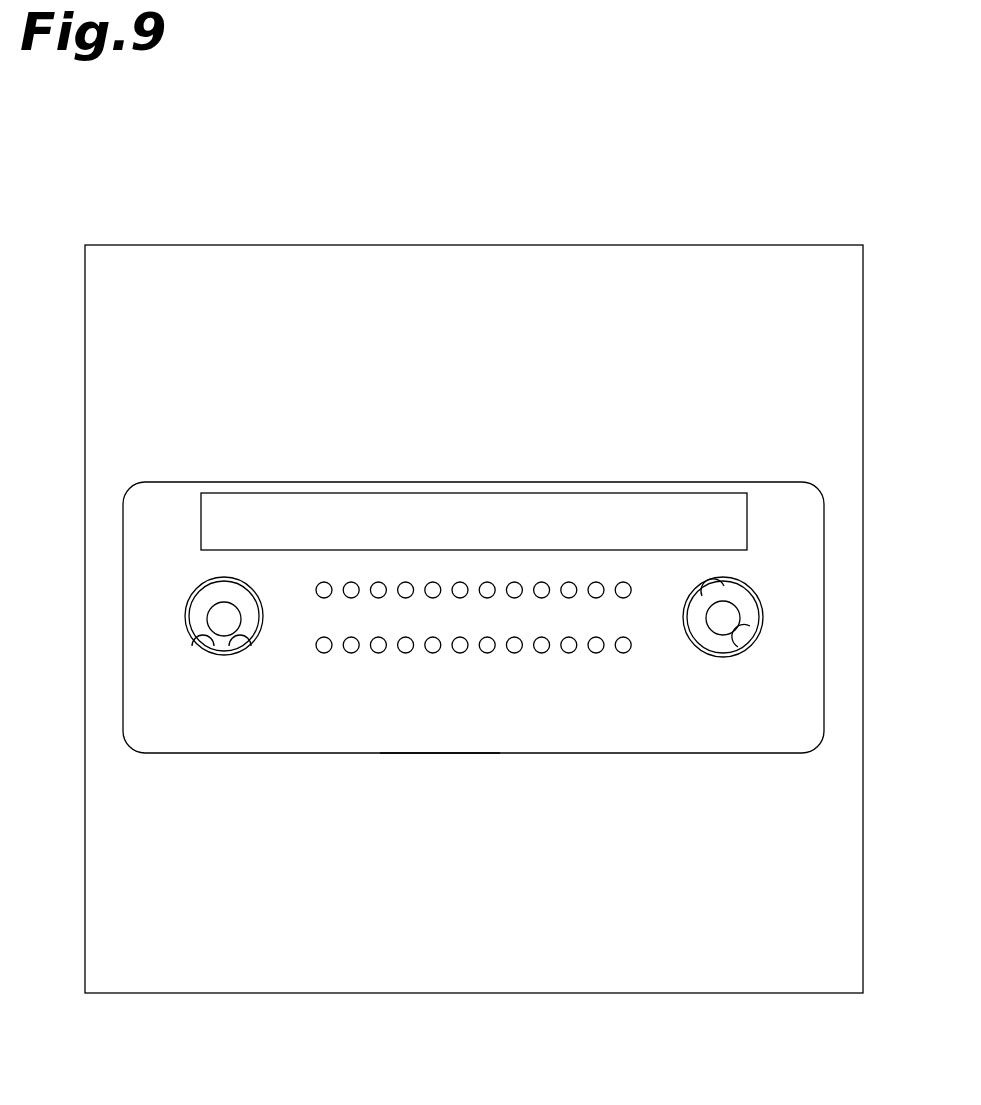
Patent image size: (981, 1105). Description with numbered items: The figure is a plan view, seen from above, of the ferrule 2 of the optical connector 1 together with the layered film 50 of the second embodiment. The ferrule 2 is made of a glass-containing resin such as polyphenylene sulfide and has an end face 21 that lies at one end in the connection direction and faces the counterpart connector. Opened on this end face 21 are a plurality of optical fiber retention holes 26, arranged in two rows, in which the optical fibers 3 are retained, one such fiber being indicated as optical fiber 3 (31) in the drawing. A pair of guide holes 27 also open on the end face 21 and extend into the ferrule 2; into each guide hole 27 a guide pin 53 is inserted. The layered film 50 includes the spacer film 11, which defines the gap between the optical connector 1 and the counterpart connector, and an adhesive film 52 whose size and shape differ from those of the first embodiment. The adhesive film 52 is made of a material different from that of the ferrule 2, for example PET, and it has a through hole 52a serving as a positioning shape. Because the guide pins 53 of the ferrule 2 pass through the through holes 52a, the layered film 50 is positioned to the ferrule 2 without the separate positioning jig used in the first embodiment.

The optical connector 1 is at (662, 481).
The ferrule 2 is at (641, 756).
The optical fiber 3 is at (488, 650).
The terminal contact 31 is at (487, 645).
The spacer film 11 is at (492, 513).
The end face 21 is at (440, 737).
The optical fiber retention hole 26 is at (322, 643).
The guide hole 27 is at (232, 642).
The layered film 50 is at (522, 196).
The adhesive film 52 is at (404, 268).
The through hole 52a is at (190, 636).
The guide pin 53 is at (221, 617).